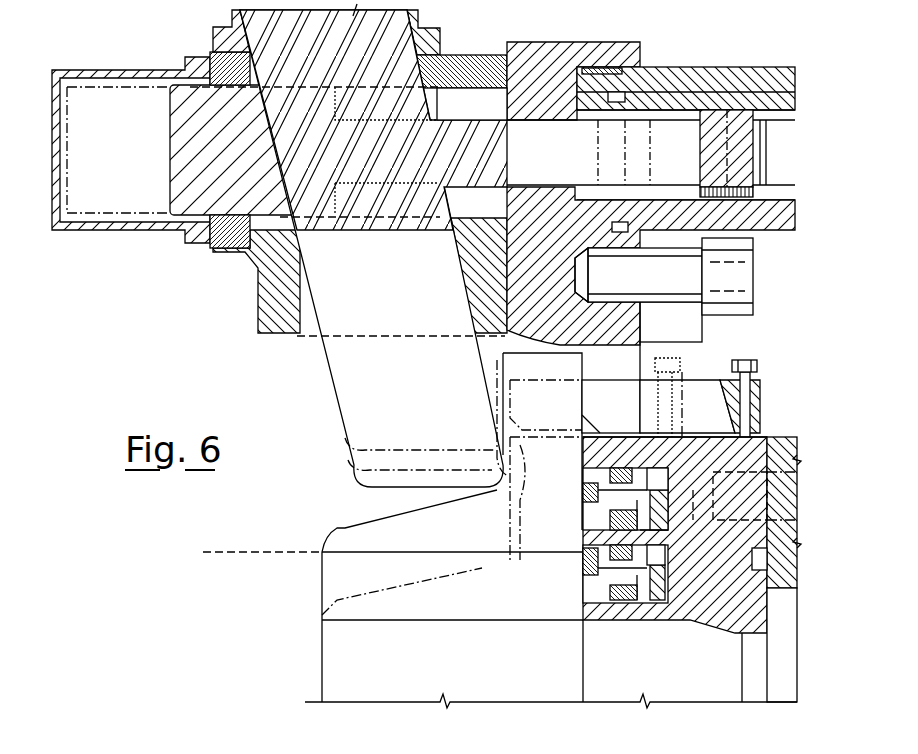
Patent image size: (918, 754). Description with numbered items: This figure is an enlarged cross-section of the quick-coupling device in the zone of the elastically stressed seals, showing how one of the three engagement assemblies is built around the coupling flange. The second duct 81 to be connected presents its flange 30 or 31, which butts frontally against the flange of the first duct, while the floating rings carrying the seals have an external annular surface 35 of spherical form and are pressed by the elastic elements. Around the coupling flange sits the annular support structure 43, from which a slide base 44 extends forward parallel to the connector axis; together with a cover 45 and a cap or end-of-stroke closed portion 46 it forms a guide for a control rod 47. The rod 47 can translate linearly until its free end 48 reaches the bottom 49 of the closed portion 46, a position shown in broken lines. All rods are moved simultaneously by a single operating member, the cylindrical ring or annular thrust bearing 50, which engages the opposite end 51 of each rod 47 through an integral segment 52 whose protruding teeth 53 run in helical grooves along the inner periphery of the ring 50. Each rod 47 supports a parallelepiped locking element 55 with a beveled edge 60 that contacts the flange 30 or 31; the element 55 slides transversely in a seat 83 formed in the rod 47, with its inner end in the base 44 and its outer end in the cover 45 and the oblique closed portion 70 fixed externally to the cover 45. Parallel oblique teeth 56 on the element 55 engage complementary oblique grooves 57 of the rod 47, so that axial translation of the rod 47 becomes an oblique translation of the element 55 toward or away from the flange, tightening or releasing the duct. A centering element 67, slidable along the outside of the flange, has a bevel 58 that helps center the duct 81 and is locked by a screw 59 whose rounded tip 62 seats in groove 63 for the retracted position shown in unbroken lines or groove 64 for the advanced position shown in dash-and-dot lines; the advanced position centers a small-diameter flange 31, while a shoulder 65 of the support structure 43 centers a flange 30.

The flange 30 is at (535, 402).
The flange 31 is at (526, 498).
The external annular surface 35 is at (648, 535).
The annular support structure 43 is at (597, 318).
The slide bases 44 is at (268, 302).
The covers 45 is at (458, 68).
The caps or end-of-stroke closed portions 46 is at (115, 232).
The control rods 47 is at (533, 180).
The free end 48 is at (172, 170).
The bottom 49 is at (62, 166).
The ring or annular thrust bearing 50 is at (683, 82).
The opposite end 51 is at (756, 158).
The integral segments 52 is at (744, 138).
The protruding teeth 53 is at (738, 100).
The locking elements 55 is at (345, 382).
The parallel oblique teeth 56 is at (342, 232).
The oblique parallel grooves 57 is at (232, 250).
The bevels 58 is at (595, 420).
The screws 59 is at (747, 360).
The beveled edge 60 is at (490, 460).
The rounded tips 62 is at (762, 438).
The groove 63 is at (745, 496).
The groove 64 is at (668, 442).
The shoulder 65 is at (528, 332).
The centering elements 67 is at (700, 388).
The oblique closed portions or caps 70 is at (212, 42).
The second duct 81 is at (322, 585).
The seats 83 is at (438, 143).